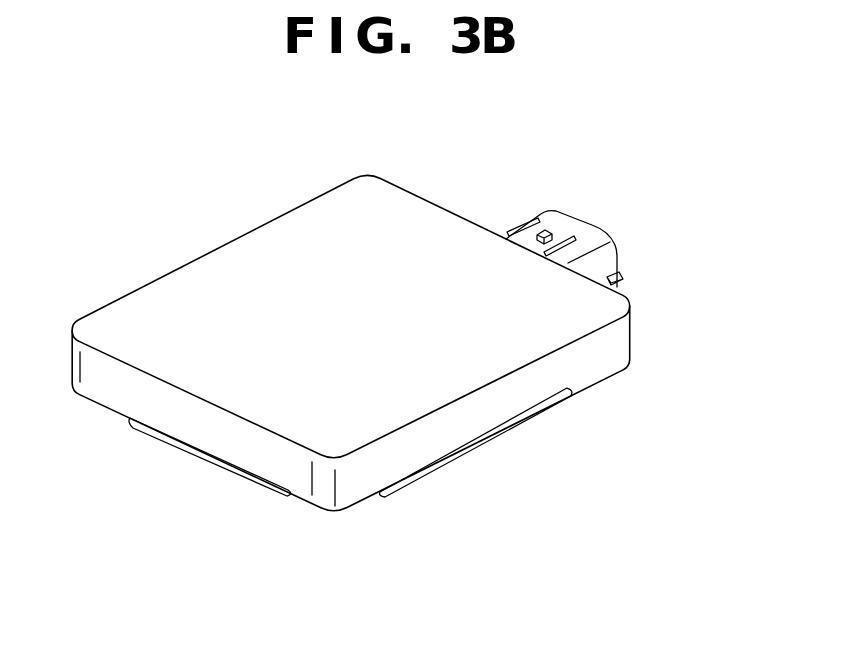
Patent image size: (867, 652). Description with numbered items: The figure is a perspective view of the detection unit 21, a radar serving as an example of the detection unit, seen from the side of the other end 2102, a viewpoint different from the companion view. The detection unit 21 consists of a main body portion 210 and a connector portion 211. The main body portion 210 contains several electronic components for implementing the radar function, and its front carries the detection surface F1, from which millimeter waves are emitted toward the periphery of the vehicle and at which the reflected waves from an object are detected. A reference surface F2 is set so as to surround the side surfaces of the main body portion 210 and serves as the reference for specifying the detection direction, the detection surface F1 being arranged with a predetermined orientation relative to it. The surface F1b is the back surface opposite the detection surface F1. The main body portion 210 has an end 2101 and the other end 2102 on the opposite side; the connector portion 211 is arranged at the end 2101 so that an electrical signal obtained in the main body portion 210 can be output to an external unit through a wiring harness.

The detection unit 21 is at (418, 337).
The main body portion 210 is at (619, 283).
The end 2101 is at (652, 336).
The other end 2102 is at (369, 539).
The connector portion 211 is at (590, 226).
The detection surface F1 is at (235, 288).
The back surface F1b is at (252, 500).
The reference surface F2 is at (485, 413).